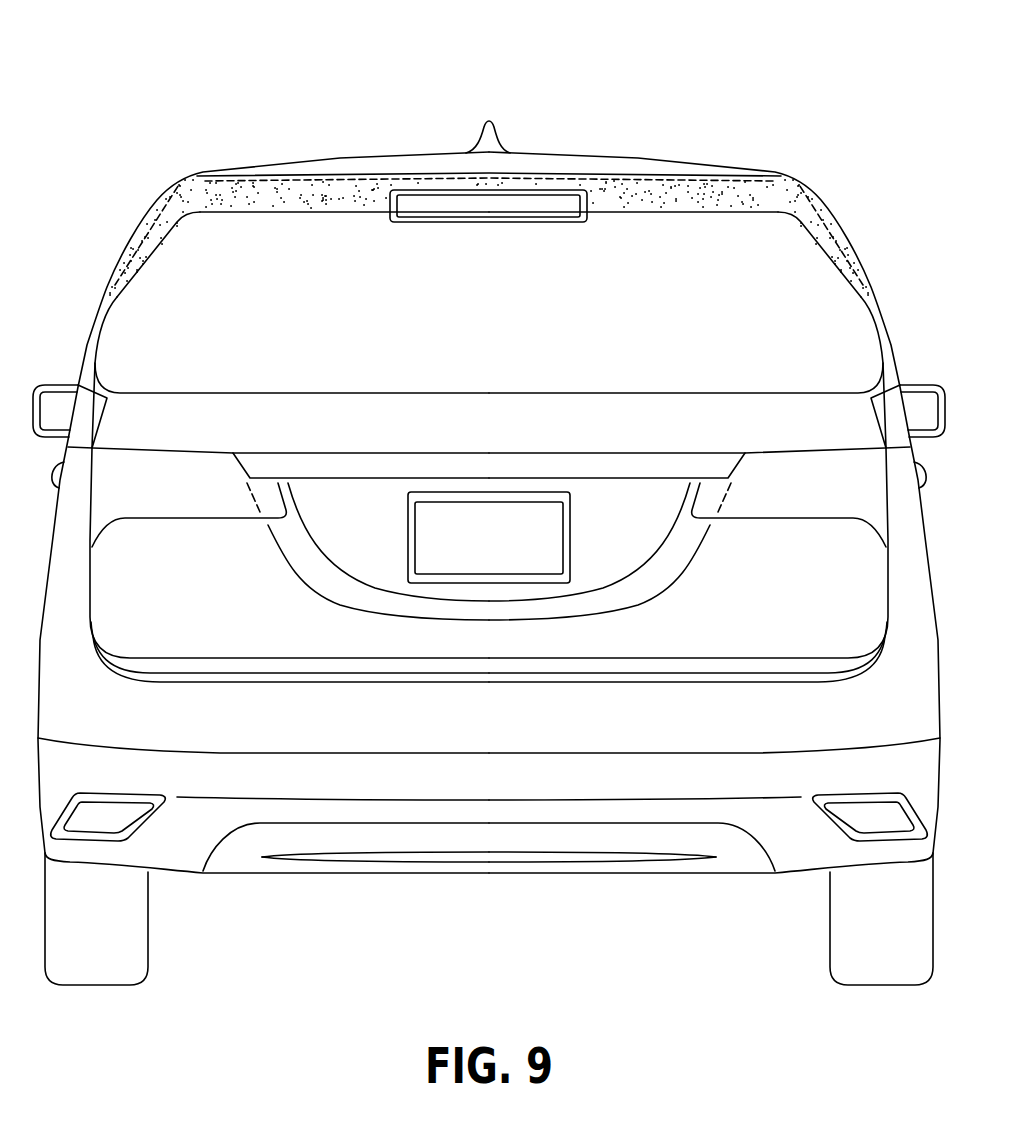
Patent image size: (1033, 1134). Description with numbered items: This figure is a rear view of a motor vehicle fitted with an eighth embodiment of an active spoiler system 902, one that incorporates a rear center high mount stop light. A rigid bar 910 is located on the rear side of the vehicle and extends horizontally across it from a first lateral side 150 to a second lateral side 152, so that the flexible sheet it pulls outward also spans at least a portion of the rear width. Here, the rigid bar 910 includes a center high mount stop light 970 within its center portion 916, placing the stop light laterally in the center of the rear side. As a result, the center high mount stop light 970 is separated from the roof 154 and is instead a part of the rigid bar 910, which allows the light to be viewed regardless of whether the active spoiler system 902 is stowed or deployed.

The active spoiler system 902 is at (803, 123).
The first lateral side 150 is at (81, 294).
The second lateral side 152 is at (897, 294).
The roof 154 is at (423, 153).
The center portion 916 is at (328, 216).
The rigid bar 910 is at (650, 216).
The center high mount stop light 970 is at (492, 206).